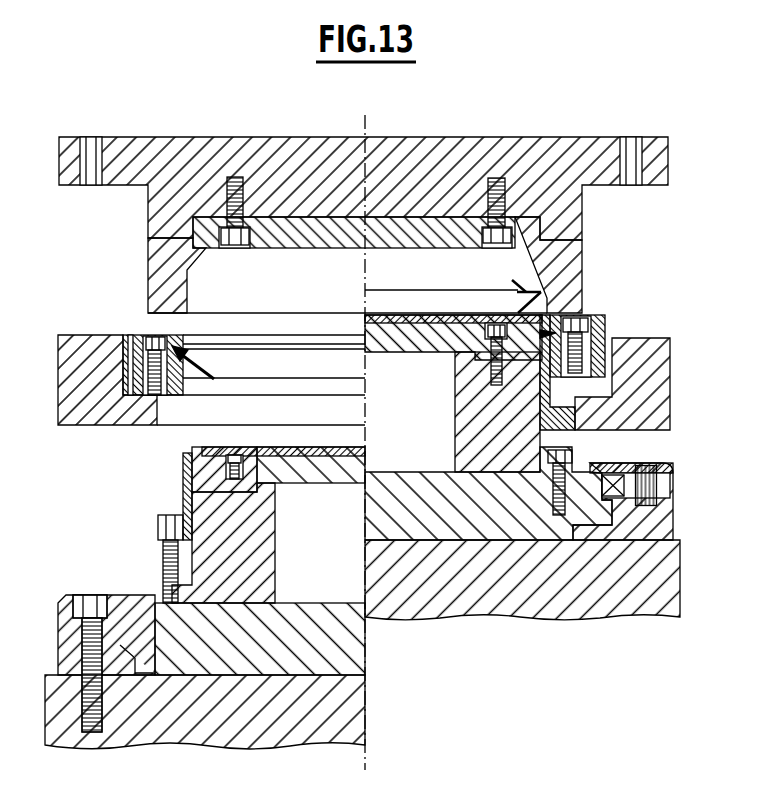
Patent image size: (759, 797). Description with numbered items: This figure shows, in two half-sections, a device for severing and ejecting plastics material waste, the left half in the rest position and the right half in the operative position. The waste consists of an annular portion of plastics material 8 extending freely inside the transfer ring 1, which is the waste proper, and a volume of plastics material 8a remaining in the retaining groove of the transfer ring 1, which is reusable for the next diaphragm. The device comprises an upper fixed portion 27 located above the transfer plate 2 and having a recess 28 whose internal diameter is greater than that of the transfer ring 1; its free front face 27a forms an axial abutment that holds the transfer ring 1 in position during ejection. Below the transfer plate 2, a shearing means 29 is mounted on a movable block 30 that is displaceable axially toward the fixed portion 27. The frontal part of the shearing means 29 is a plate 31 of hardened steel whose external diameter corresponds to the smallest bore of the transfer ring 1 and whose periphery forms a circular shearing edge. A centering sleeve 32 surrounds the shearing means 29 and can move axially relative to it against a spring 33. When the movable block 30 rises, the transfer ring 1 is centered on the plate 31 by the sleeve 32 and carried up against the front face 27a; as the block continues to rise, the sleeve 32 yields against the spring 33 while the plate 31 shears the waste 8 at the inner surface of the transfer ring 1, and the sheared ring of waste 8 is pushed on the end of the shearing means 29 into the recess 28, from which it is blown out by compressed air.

The transfer ring 1 is at (130, 372).
The transfer plate 2 is at (92, 407).
The annular portion of plastics material waste 8 is at (214, 379).
The volume of plastics material in retaining groove 8a is at (184, 336).
The upper fixed portion 27 is at (571, 260).
The free front face 27a is at (158, 316).
The recess 28 is at (347, 245).
The shearing means 29 is at (467, 430).
The movable block 30 is at (358, 695).
The plate of hardened steel 31 is at (408, 338).
The centering sleeve 32 is at (558, 430).
The spring 33 is at (165, 558).